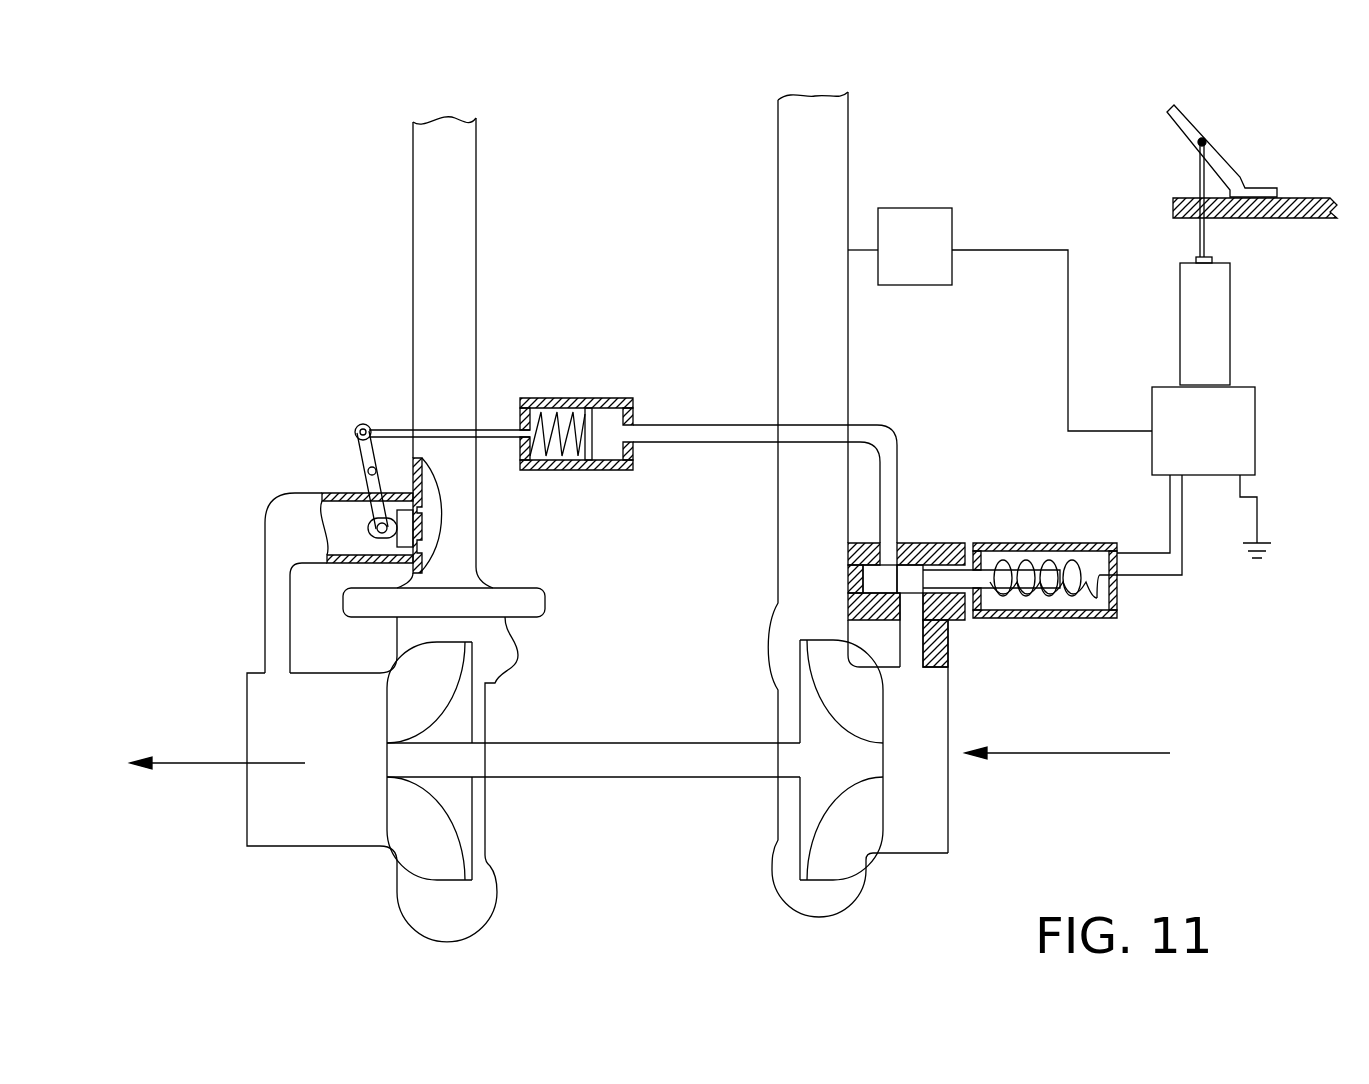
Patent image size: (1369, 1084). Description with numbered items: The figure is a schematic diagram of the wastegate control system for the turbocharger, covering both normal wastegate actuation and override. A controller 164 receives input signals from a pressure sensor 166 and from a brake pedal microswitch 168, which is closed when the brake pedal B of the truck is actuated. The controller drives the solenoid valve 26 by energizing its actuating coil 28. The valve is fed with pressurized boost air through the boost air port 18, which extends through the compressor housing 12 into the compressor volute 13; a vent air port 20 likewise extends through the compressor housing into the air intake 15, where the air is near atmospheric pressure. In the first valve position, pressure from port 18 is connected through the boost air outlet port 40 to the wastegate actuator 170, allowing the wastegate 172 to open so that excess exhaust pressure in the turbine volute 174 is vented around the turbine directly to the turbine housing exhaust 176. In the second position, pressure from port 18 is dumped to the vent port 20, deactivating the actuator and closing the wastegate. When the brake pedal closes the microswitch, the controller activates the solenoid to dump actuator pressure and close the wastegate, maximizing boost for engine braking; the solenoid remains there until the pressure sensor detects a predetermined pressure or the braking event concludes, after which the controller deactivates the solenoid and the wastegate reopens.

The compressor housing 12 is at (880, 855).
The compressor volute 13 is at (825, 918).
The air intake 15 is at (935, 795).
The boost air port 18 is at (862, 583).
The vent air port 20 is at (913, 650).
The solenoid valve 26 is at (1062, 538).
The actuating coil 28 is at (1010, 575).
The boost air outlet port 40 is at (890, 548).
The controller 164 is at (1245, 388).
The pressure sensor 166 is at (935, 208).
The brake pedal microswitch 168 is at (1215, 255).
The wastegate actuator 170 is at (592, 420).
The wastegate 172 is at (407, 531).
The turbine volute 174 is at (513, 672).
The turbine housing exhaust 176 is at (258, 672).
The brake pedal B is at (1195, 125).